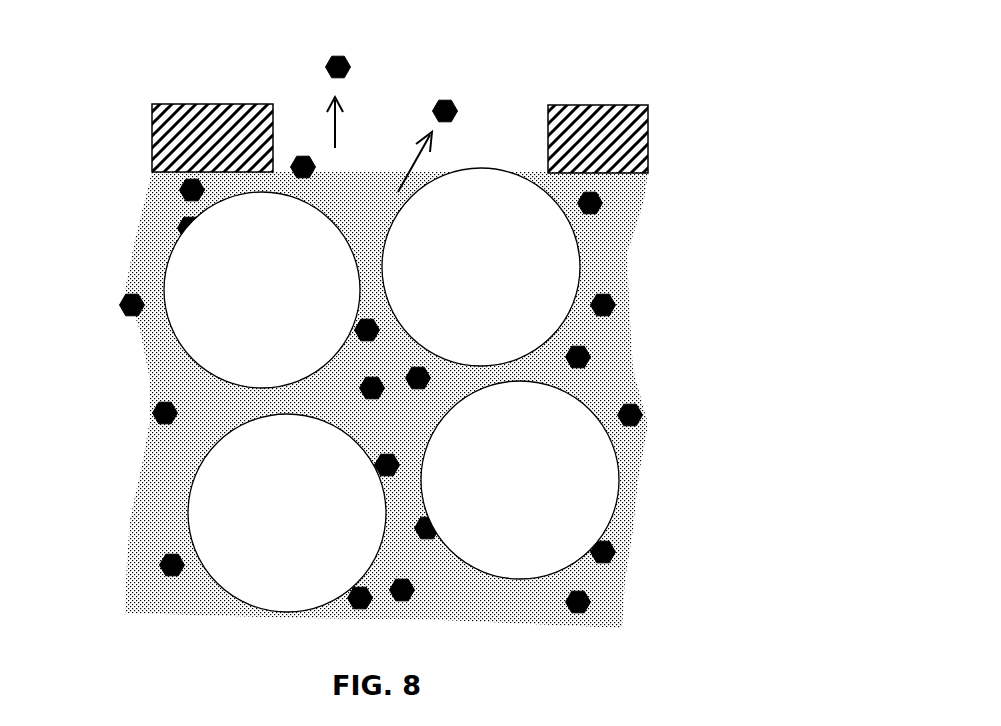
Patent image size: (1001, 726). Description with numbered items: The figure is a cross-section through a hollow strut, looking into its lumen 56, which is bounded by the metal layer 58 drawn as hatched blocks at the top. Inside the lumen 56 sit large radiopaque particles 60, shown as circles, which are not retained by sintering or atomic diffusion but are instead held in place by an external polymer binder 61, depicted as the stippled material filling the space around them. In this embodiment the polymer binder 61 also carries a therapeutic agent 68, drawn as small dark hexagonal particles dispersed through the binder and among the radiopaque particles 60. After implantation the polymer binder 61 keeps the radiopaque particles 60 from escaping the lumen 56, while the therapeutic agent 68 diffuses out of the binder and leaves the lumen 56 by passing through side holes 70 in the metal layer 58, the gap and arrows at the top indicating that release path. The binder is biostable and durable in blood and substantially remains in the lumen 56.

The lumen 56 is at (365, 400).
The metal layer 58 is at (153, 128).
The radiopaque particles 60 is at (580, 260).
The polymer binder 61 is at (627, 347).
The therapeutic agent 68 is at (350, 67).
The side holes 70 is at (525, 100).